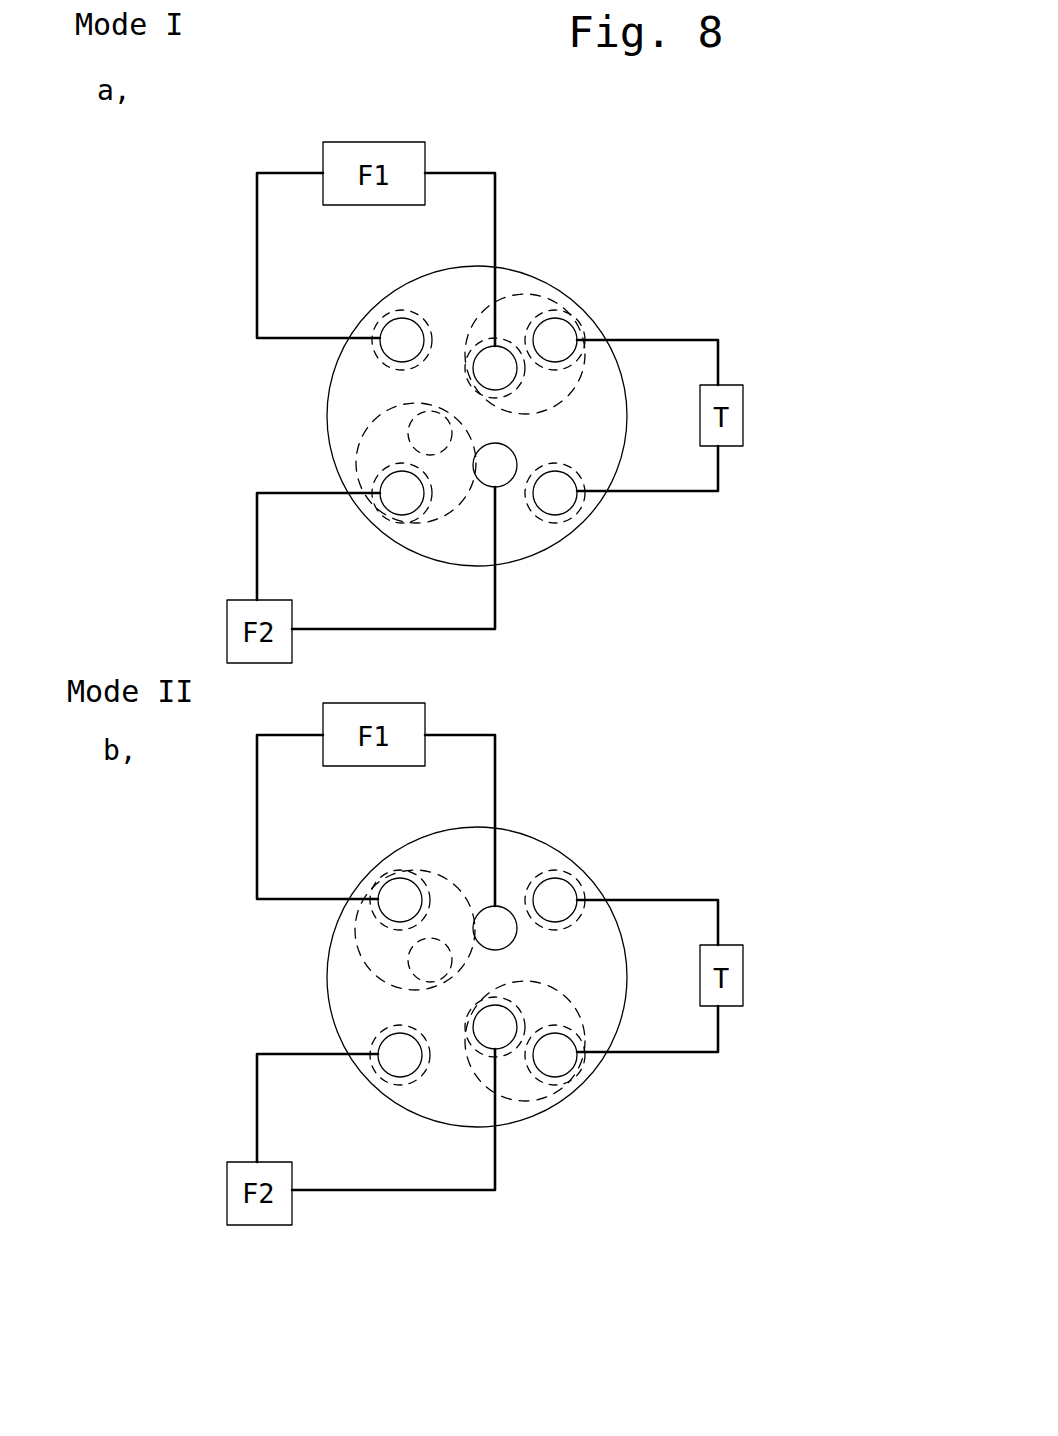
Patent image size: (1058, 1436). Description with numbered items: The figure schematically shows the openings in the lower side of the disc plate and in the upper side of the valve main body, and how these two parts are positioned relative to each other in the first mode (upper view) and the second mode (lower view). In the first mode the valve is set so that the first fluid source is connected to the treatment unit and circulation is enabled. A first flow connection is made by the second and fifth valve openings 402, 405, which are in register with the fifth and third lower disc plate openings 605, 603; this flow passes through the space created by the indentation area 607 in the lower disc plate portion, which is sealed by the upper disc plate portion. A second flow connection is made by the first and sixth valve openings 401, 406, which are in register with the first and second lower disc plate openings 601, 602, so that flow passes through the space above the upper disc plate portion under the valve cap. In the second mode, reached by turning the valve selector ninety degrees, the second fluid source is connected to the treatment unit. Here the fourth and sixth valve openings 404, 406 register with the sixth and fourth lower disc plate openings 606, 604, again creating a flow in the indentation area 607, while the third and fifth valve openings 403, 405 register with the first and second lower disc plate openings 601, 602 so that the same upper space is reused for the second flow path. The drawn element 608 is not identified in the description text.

The first valve opening 401 is at (387, 343).
The second valve opening 402 is at (500, 360).
The third valve opening 403 is at (397, 497).
The fourth valve opening 404 is at (498, 472).
The fifth valve opening 405 is at (568, 338).
The sixth valve opening 406 is at (560, 498).
The first lower disc plate opening 601 is at (380, 368).
The second lower disc plate opening 602 is at (555, 524).
The third lower disc plate opening 603 is at (570, 332).
The fourth lower disc plate opening 604 is at (378, 490).
The fifth lower disc plate opening 605 is at (518, 345).
The sixth lower disc plate opening 606 is at (397, 430).
The indentation area 607 is at (510, 290).
The rotor flow channel 608 is at (356, 445).